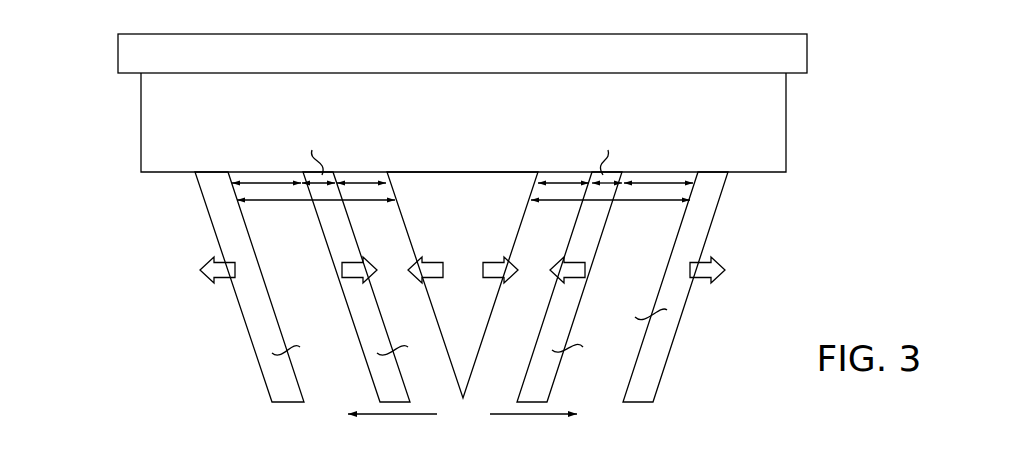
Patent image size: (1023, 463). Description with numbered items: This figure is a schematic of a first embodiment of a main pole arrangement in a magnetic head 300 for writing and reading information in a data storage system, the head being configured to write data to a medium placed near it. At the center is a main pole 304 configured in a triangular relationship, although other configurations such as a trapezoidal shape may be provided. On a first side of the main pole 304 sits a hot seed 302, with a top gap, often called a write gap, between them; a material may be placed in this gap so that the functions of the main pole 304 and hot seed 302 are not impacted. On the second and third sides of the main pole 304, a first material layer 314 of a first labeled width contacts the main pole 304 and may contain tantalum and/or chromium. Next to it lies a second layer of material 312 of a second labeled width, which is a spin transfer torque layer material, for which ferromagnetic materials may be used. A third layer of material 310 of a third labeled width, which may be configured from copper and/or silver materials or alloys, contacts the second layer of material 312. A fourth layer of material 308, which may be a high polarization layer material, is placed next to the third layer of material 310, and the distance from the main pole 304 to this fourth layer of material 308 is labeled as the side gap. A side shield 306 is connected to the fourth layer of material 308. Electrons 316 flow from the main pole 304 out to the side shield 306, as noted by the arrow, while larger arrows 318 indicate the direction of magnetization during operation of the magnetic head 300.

The magnetic head 300 is at (896, 16).
The hot seed 302 is at (795, 60).
The main pole 304 is at (482, 190).
The side shield 306 is at (455, 287).
The fourth layer of material 308 is at (700, 219).
The third layer of material 310 is at (595, 388).
The second layer of material 312 is at (538, 368).
The first material layer 314 is at (482, 391).
The electrons 316 is at (367, 417).
The larger arrows 318 is at (413, 275).